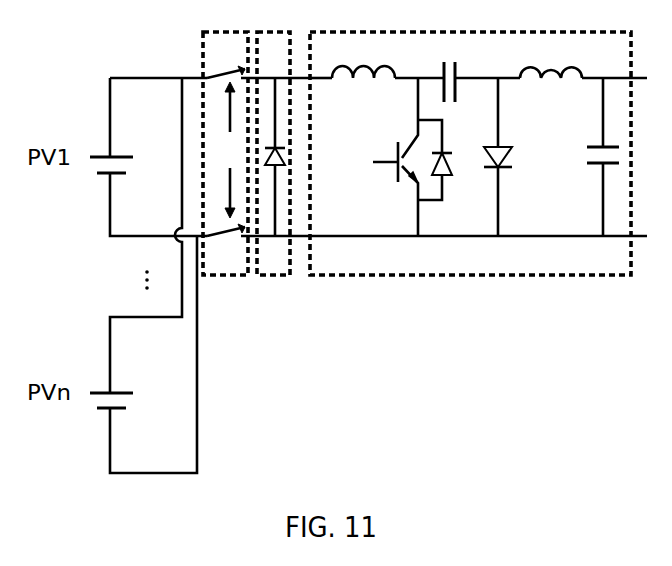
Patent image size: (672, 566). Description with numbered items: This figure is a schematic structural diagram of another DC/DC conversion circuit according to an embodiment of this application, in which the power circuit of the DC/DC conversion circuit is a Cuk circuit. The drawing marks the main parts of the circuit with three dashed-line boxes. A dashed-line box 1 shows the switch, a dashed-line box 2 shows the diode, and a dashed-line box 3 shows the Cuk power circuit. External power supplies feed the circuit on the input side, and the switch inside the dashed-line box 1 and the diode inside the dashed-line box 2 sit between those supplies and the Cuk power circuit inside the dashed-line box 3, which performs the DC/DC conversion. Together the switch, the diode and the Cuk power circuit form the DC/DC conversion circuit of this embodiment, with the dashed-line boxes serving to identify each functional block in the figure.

The dashed-line box showing the switch 1 is at (222, 275).
The dashed-line box showing the diode 2 is at (268, 275).
The dashed-line box showing the Cuk power circuit 3 is at (420, 275).